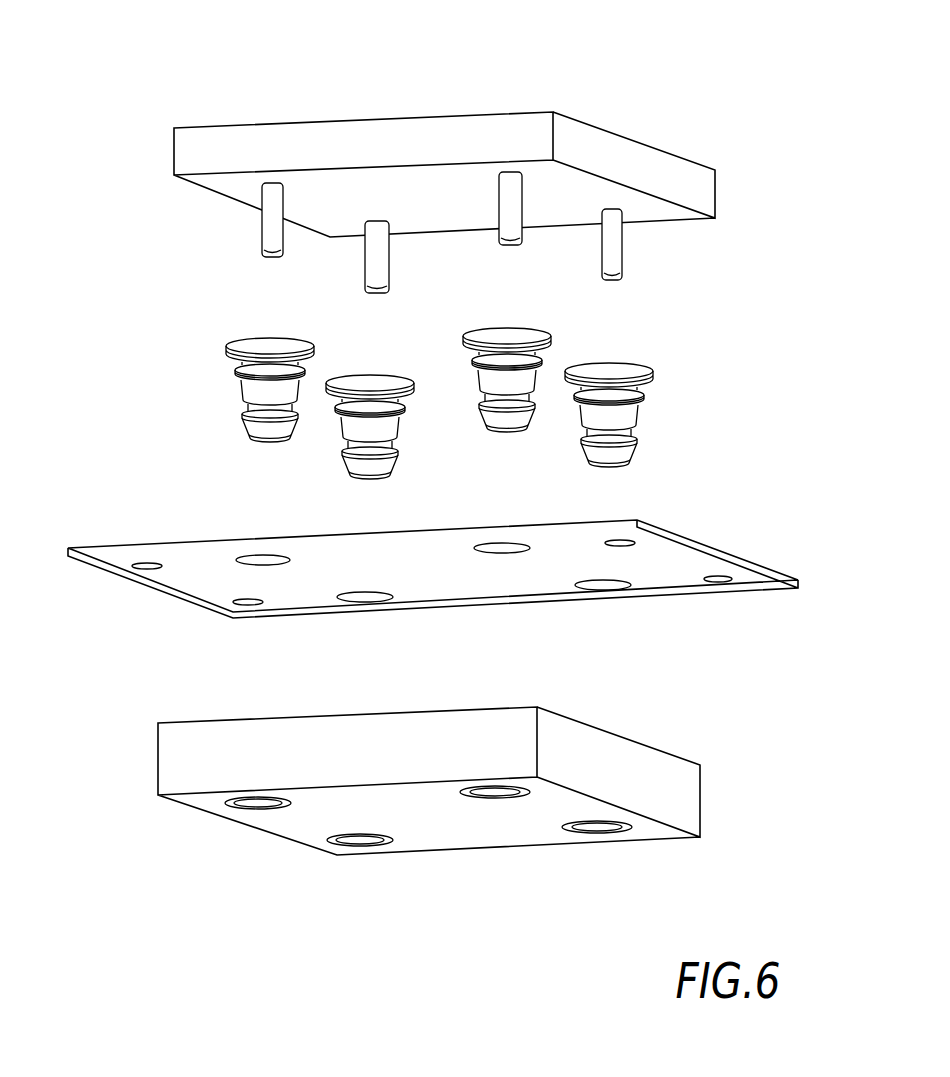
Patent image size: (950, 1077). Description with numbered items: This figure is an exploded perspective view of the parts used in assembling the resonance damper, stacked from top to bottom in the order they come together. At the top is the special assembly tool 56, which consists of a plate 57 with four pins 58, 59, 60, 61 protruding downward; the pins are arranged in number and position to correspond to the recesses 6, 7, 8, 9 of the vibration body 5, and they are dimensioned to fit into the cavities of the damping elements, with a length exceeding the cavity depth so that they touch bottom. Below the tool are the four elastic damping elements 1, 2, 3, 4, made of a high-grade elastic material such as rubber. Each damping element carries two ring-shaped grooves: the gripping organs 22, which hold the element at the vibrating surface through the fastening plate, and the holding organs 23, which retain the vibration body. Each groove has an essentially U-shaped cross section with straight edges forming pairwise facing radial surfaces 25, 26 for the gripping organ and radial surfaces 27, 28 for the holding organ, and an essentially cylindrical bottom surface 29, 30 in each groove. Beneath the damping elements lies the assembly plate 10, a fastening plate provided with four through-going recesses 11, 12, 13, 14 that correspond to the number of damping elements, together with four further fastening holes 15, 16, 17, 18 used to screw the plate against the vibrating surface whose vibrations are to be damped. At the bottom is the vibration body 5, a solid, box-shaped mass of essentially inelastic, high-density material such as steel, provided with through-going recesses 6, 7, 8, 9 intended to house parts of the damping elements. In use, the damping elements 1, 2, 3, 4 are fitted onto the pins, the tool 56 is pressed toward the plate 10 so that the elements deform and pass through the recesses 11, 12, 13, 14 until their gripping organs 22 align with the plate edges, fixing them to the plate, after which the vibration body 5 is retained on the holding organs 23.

The damping element 1 is at (489, 392).
The damping element 2 is at (233, 378).
The damping element 3 is at (338, 435).
The damping element 4 is at (665, 401).
The vibration body 5 is at (421, 799).
The recess 6 is at (502, 797).
The recess 7 is at (245, 812).
The recess 8 is at (338, 848).
The recess 9 is at (608, 825).
The assembly plate 10 is at (430, 579).
The recess 11 is at (507, 550).
The recess 12 is at (258, 558).
The recess 13 is at (366, 598).
The recess 14 is at (608, 588).
The fastening hole 15 is at (617, 547).
The fastening hole 16 is at (138, 567).
The fastening hole 17 is at (240, 606).
The fastening hole 18 is at (733, 579).
The gripping organ 22 is at (637, 388).
The holding organ 23 is at (630, 432).
The radial surface 25 is at (472, 352).
The radial surface 26 is at (547, 352).
The radial surface 27 is at (480, 397).
The radial surface 28 is at (535, 402).
The cylindrical bottom surface 29 is at (503, 348).
The cylindrical bottom surface 30 is at (502, 395).
The assembly tool 56 is at (399, 154).
The plate 57 is at (200, 126).
The pin 58 is at (270, 203).
The pin 59 is at (372, 233).
The pin 60 is at (610, 220).
The pin 61 is at (507, 198).